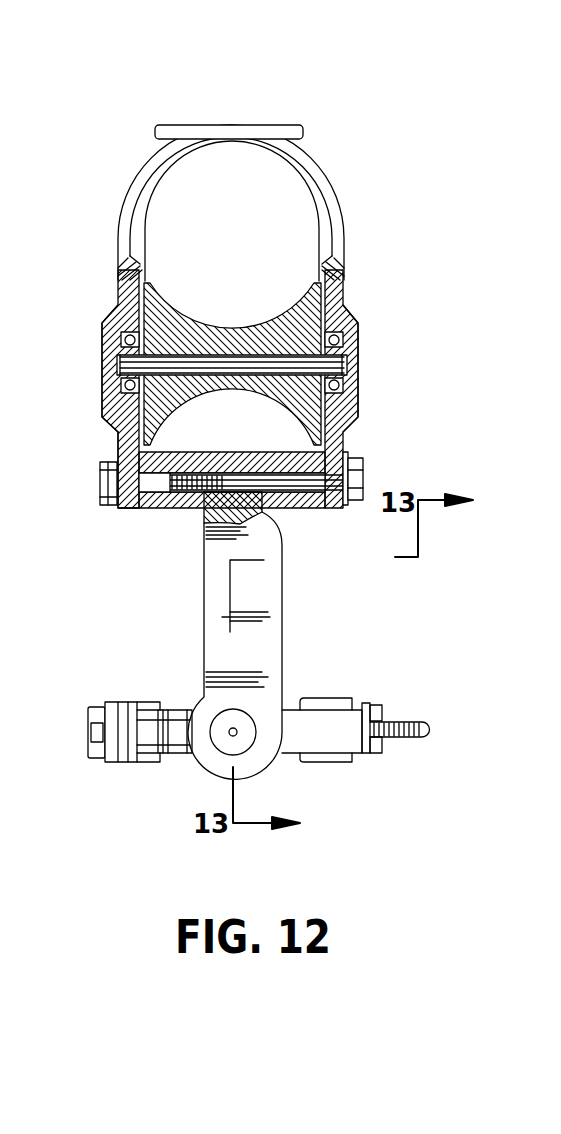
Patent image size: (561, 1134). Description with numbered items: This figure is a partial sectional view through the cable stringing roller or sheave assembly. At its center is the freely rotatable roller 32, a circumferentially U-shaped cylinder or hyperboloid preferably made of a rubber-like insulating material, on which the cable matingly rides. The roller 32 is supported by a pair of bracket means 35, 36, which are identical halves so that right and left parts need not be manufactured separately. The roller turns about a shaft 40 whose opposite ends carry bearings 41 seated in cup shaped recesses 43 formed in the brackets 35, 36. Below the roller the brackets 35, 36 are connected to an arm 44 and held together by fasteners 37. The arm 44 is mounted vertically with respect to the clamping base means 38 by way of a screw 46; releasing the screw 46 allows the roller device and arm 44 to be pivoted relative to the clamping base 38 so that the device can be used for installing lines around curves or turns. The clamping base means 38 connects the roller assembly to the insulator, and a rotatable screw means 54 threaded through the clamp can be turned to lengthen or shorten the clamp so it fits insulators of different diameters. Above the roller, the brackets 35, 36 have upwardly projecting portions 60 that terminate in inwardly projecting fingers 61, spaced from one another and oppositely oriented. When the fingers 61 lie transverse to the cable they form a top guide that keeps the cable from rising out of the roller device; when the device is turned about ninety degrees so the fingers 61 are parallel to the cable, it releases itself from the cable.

The roller 32 is at (200, 324).
The bracket 35 is at (336, 423).
The bracket 36 is at (120, 433).
The fasteners 37 is at (104, 490).
The clamping base means 38 is at (151, 688).
The shaft 40 is at (118, 362).
The bearings 41 is at (120, 335).
The cup shaped recesses 43 is at (126, 386).
The arm 44 is at (264, 518).
The screw 46 is at (222, 738).
The screw means 54 is at (428, 722).
The upwardly projecting portions 60 is at (123, 195).
The fingers 61 is at (157, 132).